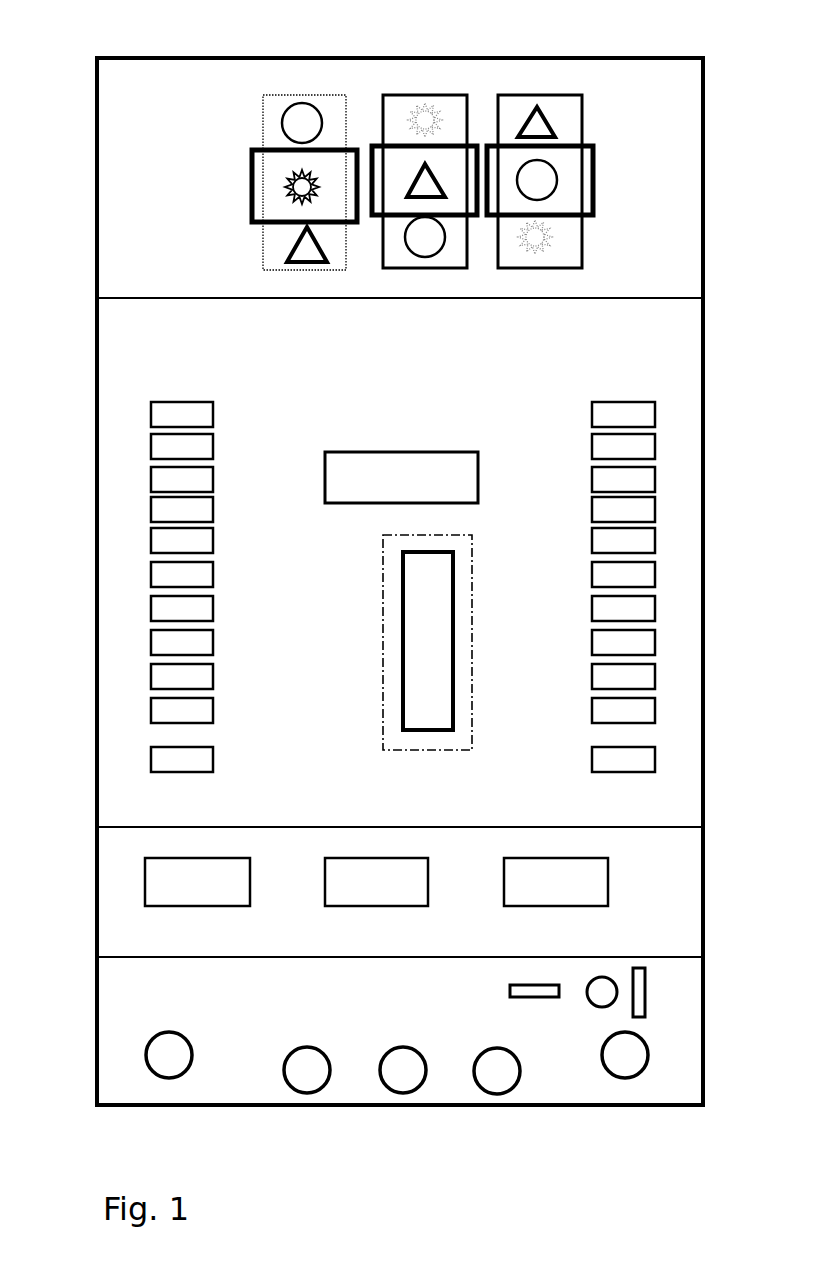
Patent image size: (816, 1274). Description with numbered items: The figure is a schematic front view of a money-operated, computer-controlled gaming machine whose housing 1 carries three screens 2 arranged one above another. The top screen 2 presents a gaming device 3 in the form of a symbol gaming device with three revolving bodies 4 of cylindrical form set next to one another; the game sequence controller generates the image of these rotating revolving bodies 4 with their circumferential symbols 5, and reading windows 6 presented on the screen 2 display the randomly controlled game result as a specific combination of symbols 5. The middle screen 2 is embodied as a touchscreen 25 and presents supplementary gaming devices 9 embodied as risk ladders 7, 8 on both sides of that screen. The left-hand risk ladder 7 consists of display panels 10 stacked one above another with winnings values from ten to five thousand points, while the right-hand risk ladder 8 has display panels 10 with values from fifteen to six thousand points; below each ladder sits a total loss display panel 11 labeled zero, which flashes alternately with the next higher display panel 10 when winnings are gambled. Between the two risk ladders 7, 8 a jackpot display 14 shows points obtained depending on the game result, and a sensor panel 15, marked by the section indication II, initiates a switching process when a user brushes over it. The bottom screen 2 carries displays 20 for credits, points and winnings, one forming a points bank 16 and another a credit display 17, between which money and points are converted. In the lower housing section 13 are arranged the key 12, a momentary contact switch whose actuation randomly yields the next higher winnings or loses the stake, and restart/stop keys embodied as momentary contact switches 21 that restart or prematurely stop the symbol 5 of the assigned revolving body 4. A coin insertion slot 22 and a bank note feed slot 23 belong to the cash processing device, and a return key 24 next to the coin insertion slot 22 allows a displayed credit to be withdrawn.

The housing 1 is at (703, 333).
The screen 2 is at (639, 156).
The gaming device 3 is at (555, 75).
The revolving body 4 is at (303, 95).
The symbol 5 is at (290, 122).
The reading window 6 is at (352, 222).
The left-hand risk ladder 7 is at (182, 378).
The right-hand risk ladder 8 is at (622, 378).
The supplementary gaming device 9 is at (112, 378).
The display panel 10 is at (145, 495).
The total loss display panel 11 is at (151, 760).
The key 12 is at (158, 1066).
The lower housing section 13 is at (210, 1008).
The jackpot display 14 is at (389, 489).
The sensor panel 15 is at (416, 653).
The points bank 16 is at (539, 891).
The credit display 17 is at (186, 891).
The display 20 is at (198, 908).
The momentary contact switch 21 is at (296, 1081).
The coin insertion slot 22 is at (647, 1002).
The bank note feed slot 23 is at (510, 985).
The return key 24 is at (615, 988).
The touchscreen 25 is at (113, 323).
The section line II is at (472, 642).